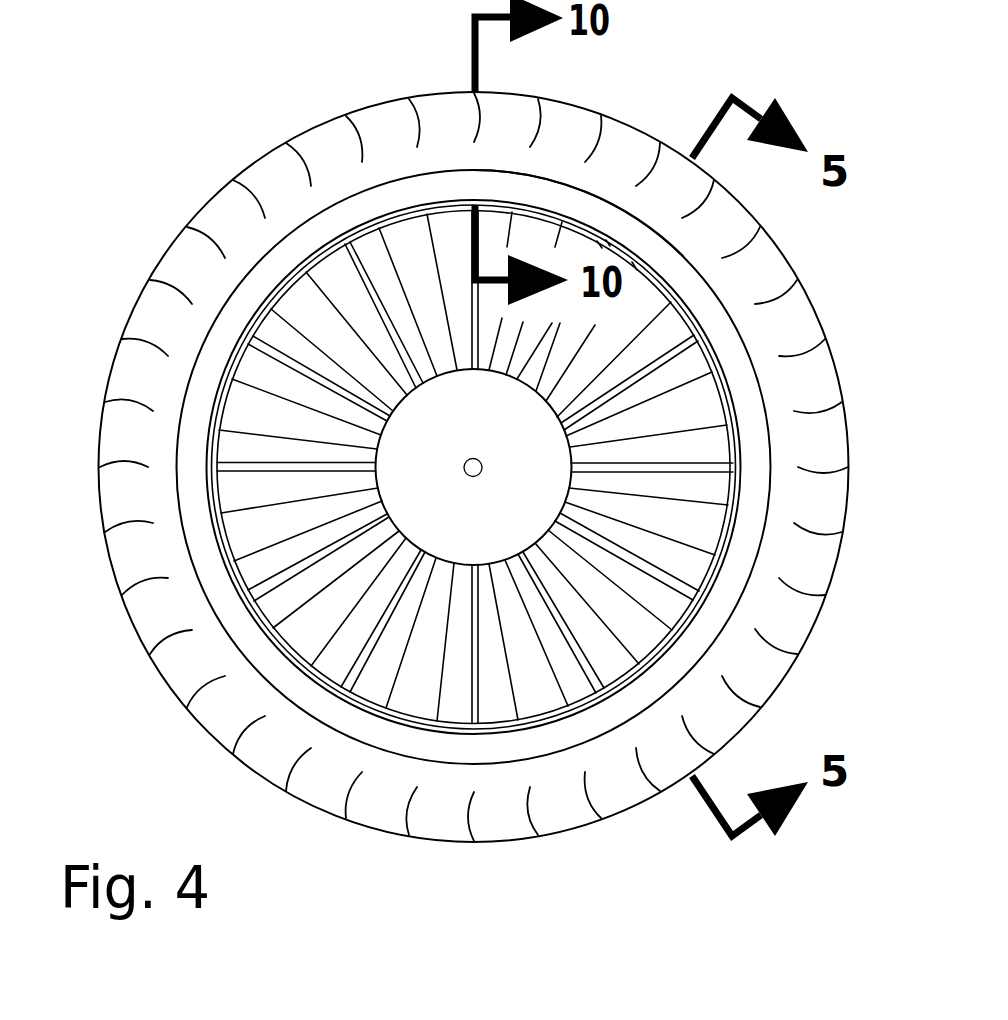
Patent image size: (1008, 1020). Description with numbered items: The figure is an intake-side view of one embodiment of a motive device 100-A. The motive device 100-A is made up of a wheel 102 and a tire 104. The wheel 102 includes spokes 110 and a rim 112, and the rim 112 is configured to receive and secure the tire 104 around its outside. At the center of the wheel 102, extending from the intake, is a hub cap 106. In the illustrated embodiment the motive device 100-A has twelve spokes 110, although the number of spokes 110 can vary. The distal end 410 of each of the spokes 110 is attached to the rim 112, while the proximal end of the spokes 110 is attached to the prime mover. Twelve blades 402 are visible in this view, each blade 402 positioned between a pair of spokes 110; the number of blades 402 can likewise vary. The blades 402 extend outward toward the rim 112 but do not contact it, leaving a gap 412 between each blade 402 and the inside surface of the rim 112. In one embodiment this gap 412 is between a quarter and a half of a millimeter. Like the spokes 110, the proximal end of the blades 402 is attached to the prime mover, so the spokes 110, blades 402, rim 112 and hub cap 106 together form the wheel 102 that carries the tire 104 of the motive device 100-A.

The motive device 100-A is at (152, 142).
The tire 104 is at (367, 108).
The wheel 102 is at (747, 345).
The rim 112 is at (597, 197).
The spokes 110 is at (688, 476).
The gap 412 is at (733, 410).
The distal end 410 is at (218, 460).
The blades 402 is at (268, 632).
The hub cap 106 is at (460, 441).